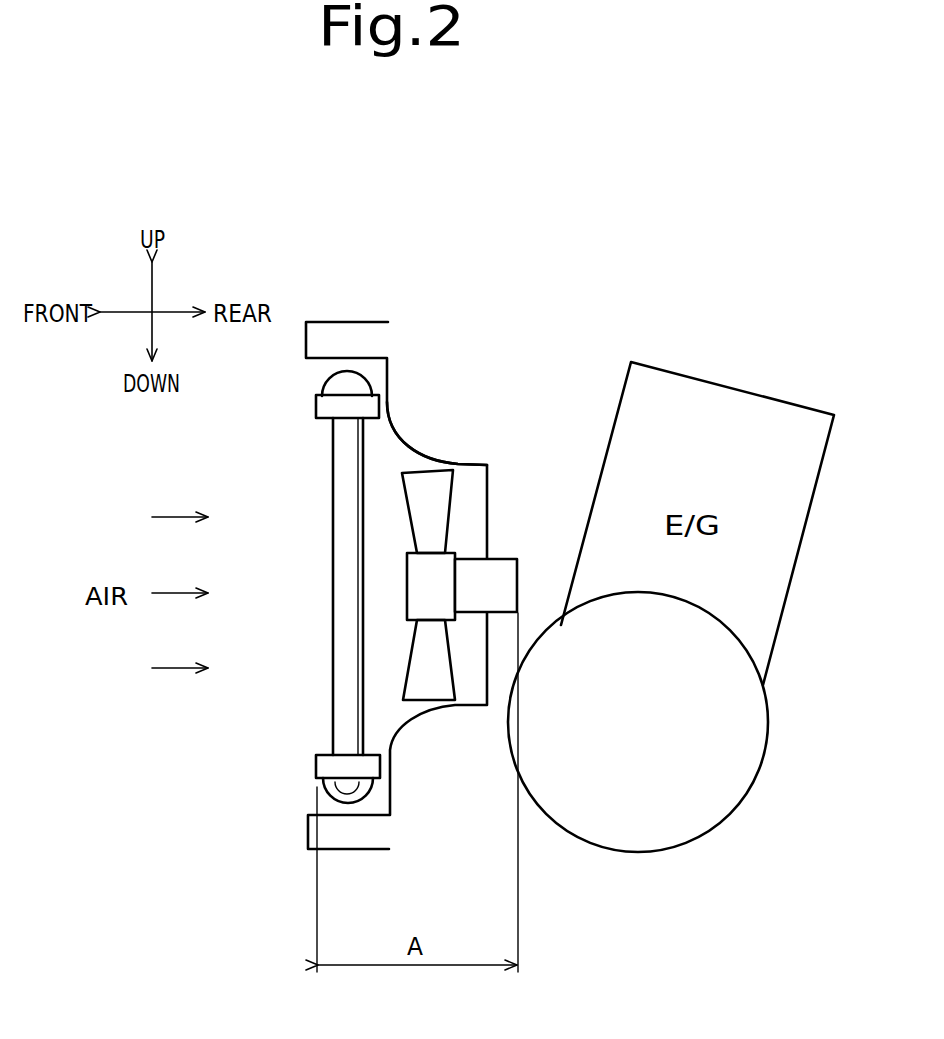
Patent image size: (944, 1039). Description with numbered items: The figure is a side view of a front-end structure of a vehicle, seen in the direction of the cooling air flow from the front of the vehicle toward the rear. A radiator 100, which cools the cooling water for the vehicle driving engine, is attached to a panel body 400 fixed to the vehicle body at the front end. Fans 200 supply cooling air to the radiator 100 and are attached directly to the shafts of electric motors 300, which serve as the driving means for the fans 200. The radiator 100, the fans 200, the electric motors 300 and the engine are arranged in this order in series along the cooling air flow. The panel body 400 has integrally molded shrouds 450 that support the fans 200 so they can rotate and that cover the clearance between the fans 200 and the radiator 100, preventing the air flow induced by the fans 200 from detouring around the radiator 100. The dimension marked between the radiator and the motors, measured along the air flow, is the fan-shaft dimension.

The radiator 100 is at (343, 507).
The fans 200 is at (437, 495).
The electric motors 300 is at (505, 580).
The panel body 400 is at (362, 321).
The shrouds 450 is at (407, 438).